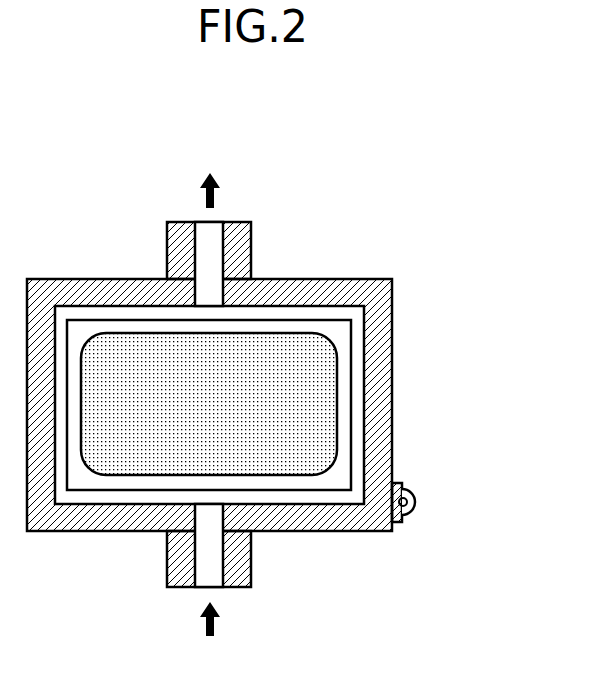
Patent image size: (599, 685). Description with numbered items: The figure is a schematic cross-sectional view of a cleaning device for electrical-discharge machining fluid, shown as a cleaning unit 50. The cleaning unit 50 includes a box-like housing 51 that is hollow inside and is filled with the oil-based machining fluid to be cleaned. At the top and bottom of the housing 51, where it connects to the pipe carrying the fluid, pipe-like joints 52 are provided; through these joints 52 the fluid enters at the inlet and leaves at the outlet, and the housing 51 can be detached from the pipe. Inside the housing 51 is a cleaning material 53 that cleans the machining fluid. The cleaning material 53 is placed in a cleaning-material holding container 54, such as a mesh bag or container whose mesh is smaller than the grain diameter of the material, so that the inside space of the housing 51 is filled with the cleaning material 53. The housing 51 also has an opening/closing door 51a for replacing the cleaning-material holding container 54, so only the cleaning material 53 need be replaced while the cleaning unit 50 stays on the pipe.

The cleaning unit 50 is at (402, 129).
The housing 51 is at (110, 279).
The opening/closing door 51a is at (385, 443).
The joint 52 is at (251, 246).
The cleaning material 53 is at (318, 400).
The cleaning-material holding container 54 is at (345, 353).